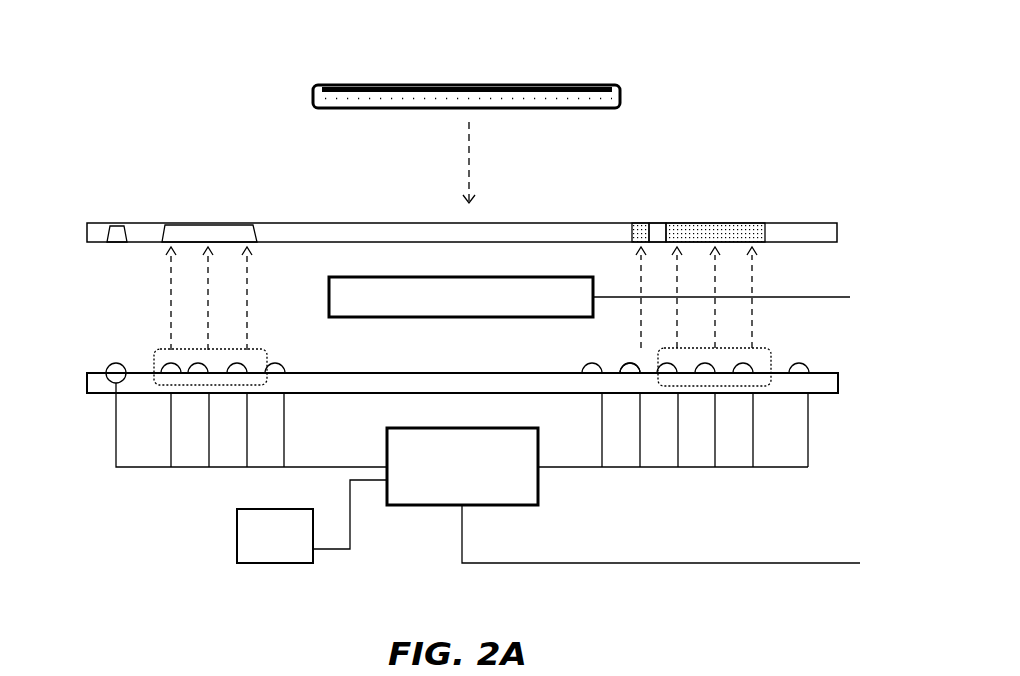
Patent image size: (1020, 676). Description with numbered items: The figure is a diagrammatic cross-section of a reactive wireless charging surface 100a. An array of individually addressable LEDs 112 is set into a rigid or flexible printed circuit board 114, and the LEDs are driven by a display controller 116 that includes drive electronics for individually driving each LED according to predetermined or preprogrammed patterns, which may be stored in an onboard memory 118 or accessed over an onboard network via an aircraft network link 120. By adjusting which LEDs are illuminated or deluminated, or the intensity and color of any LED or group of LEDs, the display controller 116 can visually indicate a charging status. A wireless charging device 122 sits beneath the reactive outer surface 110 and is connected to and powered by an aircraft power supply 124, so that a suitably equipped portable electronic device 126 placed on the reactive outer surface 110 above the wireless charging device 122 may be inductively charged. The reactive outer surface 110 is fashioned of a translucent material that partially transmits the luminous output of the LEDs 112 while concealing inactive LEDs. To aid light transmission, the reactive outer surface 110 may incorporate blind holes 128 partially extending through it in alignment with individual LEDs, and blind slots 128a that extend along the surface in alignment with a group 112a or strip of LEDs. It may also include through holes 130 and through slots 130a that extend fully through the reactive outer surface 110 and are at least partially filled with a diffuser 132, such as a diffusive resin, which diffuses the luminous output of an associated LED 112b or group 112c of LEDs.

The reactive wireless charging surface 100a is at (82, 55).
The reactive outer surface 110 is at (830, 234).
The individually addressable LEDs 112 is at (116, 363).
The group of LEDs 112a is at (268, 357).
The associated LED 112b is at (640, 362).
The group of LEDs 112c is at (772, 366).
The printed circuit board 114 is at (817, 382).
The display controller 116 is at (481, 480).
The onboard memory 118 is at (294, 550).
The aircraft network link 120 is at (664, 562).
The wireless charging device 122 is at (484, 310).
The aircraft power supply 124 is at (827, 297).
The portable electronic device 126 is at (618, 93).
The blind holes 128 is at (117, 242).
The blind slots 128a is at (190, 226).
The through holes 130 is at (640, 230).
The through slots 130a is at (750, 232).
The diffuser 132 is at (725, 232).